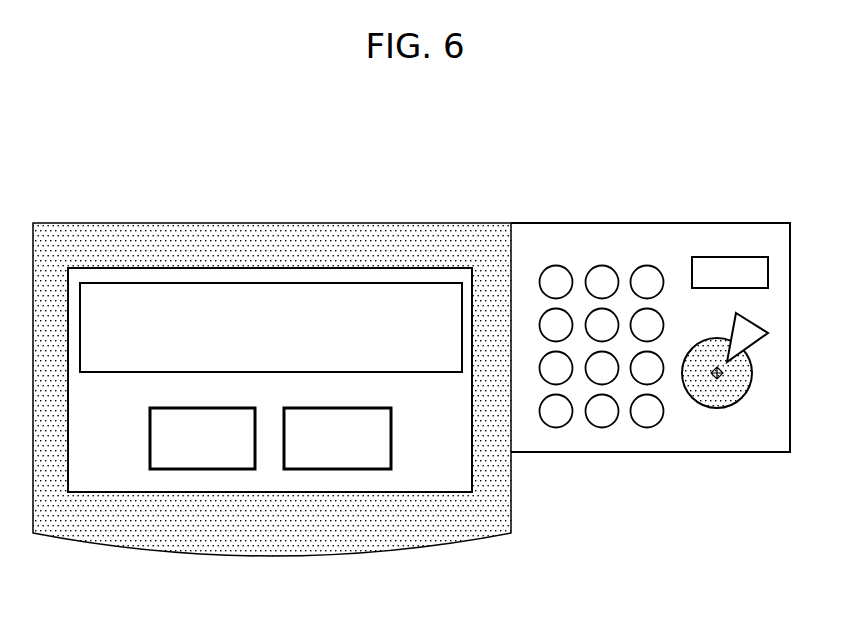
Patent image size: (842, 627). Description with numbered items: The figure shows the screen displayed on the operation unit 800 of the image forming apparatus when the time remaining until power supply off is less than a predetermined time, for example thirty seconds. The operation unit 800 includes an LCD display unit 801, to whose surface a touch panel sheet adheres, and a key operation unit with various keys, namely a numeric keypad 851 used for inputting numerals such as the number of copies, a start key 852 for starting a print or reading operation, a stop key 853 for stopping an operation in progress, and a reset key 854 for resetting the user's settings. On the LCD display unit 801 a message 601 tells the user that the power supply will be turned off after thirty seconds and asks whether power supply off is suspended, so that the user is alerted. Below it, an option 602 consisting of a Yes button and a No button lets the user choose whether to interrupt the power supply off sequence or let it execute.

The operation unit 800 is at (229, 223).
The LCD display unit 801 is at (383, 268).
The message display area 601 is at (305, 283).
The option 602 is at (270, 467).
The numeric keypad 851 is at (554, 246).
The start key 852 is at (716, 408).
The stop key 853 is at (735, 330).
The reset key 854 is at (730, 256).